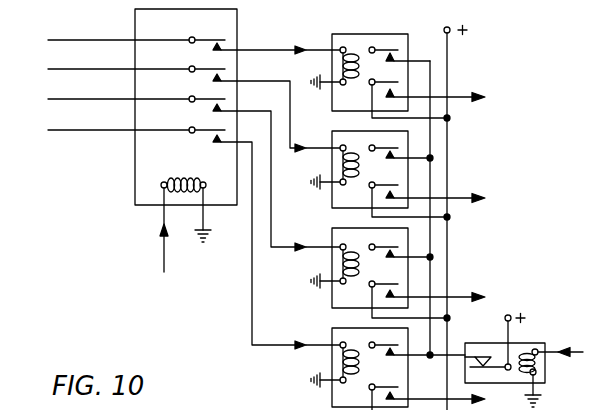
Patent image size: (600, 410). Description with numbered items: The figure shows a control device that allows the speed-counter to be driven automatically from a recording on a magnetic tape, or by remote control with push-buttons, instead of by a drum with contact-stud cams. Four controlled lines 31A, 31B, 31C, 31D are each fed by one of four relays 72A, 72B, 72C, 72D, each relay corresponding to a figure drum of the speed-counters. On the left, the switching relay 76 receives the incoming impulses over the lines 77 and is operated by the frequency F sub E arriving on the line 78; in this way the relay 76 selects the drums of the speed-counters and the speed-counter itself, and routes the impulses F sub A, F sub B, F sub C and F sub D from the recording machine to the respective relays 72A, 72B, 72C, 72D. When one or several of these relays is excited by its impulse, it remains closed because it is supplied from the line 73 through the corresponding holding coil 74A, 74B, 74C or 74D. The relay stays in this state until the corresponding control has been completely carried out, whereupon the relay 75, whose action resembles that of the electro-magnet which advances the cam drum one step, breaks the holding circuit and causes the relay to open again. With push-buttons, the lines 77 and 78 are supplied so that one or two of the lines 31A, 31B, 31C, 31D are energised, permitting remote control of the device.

The switching relay 76 is at (135, 159).
The line 77 is at (72, 38).
The line 78 is at (162, 252).
The line 73 is at (449, 52).
The relay 72A is at (376, 33).
The relay 72B is at (403, 140).
The relay 72C is at (397, 237).
The relay 72D is at (390, 339).
The holding coil 74A is at (342, 67).
The holding coil 74B is at (342, 166).
The holding coil 74C is at (342, 265).
The holding coil 74D is at (342, 364).
The line 31A is at (457, 98).
The line 31B is at (457, 199).
The line 31C is at (457, 298).
The line 31D is at (457, 400).
The relay 75 is at (525, 343).